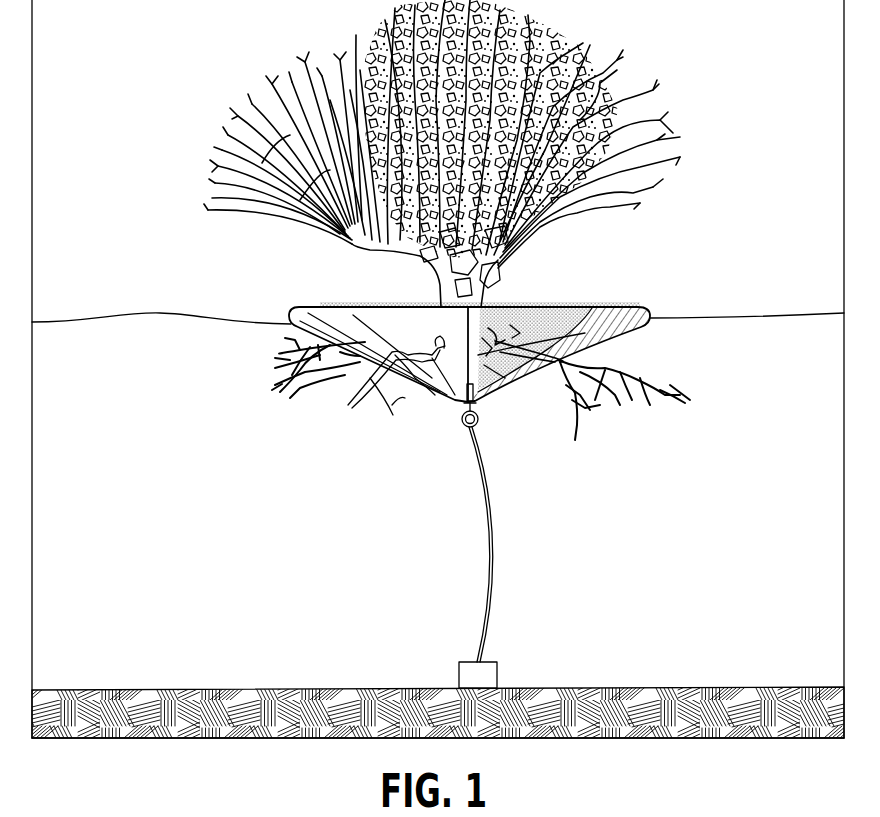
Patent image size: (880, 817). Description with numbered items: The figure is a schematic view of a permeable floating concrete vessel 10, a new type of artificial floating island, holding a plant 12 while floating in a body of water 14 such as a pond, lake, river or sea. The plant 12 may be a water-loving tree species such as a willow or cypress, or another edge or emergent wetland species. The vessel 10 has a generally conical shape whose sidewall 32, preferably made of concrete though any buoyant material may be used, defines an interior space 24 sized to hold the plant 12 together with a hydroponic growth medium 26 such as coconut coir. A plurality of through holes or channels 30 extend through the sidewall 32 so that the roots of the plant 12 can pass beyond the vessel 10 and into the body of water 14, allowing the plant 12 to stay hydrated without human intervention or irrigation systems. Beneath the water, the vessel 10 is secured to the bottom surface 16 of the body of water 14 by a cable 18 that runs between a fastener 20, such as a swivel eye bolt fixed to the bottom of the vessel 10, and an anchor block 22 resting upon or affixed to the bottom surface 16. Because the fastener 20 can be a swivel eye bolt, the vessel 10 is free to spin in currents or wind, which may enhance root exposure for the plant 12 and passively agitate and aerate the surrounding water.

The permeable floating concrete vessel 10 is at (320, 291).
The plant 12 is at (630, 207).
The body of water 14 is at (708, 543).
The bottom surface 16 is at (715, 688).
The cable 18 is at (493, 532).
The fastener 20 is at (482, 421).
The anchor block 22 is at (496, 672).
The interior space 24 is at (558, 318).
The hydroponic growth medium 26 is at (523, 318).
The through holes or channels 30 is at (396, 357).
The sidewall 32 is at (610, 336).